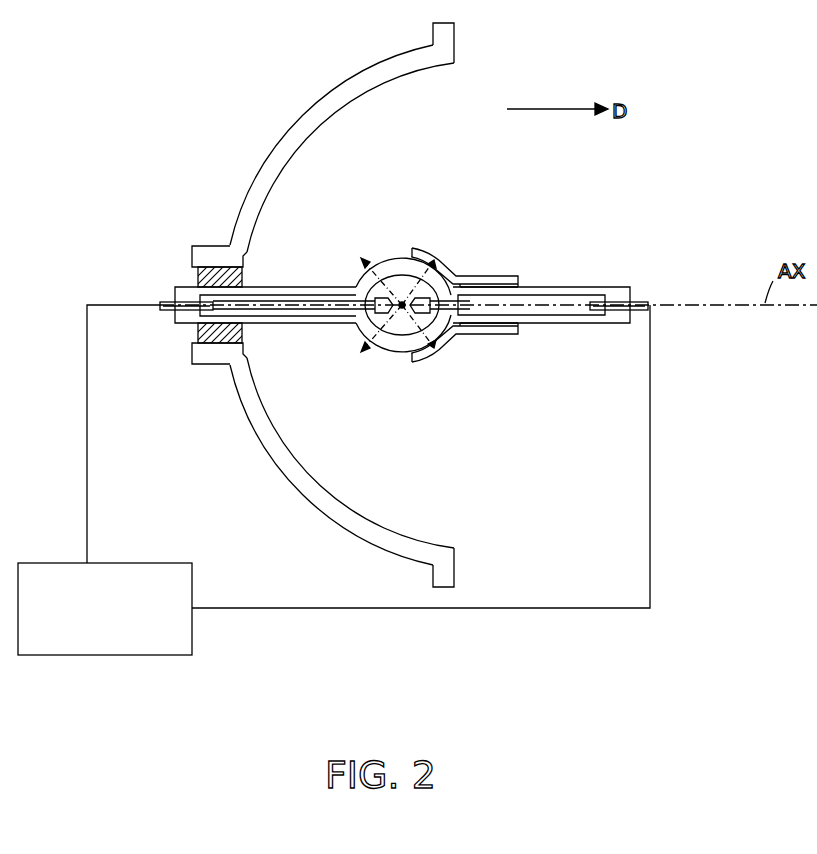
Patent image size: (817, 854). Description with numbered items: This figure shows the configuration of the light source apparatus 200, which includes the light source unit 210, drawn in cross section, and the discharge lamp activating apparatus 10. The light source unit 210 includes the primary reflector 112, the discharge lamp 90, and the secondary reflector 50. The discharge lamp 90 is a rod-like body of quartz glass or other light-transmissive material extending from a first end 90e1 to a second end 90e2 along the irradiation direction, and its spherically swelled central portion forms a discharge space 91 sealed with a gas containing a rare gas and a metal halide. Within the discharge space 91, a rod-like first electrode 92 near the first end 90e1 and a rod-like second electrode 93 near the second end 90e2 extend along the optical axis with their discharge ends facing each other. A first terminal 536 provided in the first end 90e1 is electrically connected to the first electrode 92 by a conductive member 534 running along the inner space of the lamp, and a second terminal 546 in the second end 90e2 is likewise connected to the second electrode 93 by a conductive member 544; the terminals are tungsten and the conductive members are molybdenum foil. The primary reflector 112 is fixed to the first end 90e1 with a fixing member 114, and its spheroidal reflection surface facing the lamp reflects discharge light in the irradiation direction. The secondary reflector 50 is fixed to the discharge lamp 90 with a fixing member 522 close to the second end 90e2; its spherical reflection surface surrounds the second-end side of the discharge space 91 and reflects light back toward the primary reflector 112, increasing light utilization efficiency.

The light source apparatus 200 is at (752, 53).
The light source unit 210 is at (305, 305).
The primary reflector 112 is at (316, 118).
The fixing member 114 is at (197, 270).
The discharge lamp 90 is at (390, 262).
The first end 90e1 is at (185, 285).
The second end 90e2 is at (605, 287).
The discharge space 91 is at (399, 323).
The first electrode 92 is at (372, 332).
The second electrode 93 is at (445, 332).
The secondary reflector 50 is at (415, 248).
The fixing member 522 is at (530, 283).
The conductive member 534 is at (285, 316).
The first terminal 536 is at (168, 313).
The conductive member 544 is at (538, 316).
The second terminal 546 is at (628, 322).
The discharge lamp activating apparatus 10 is at (133, 563).